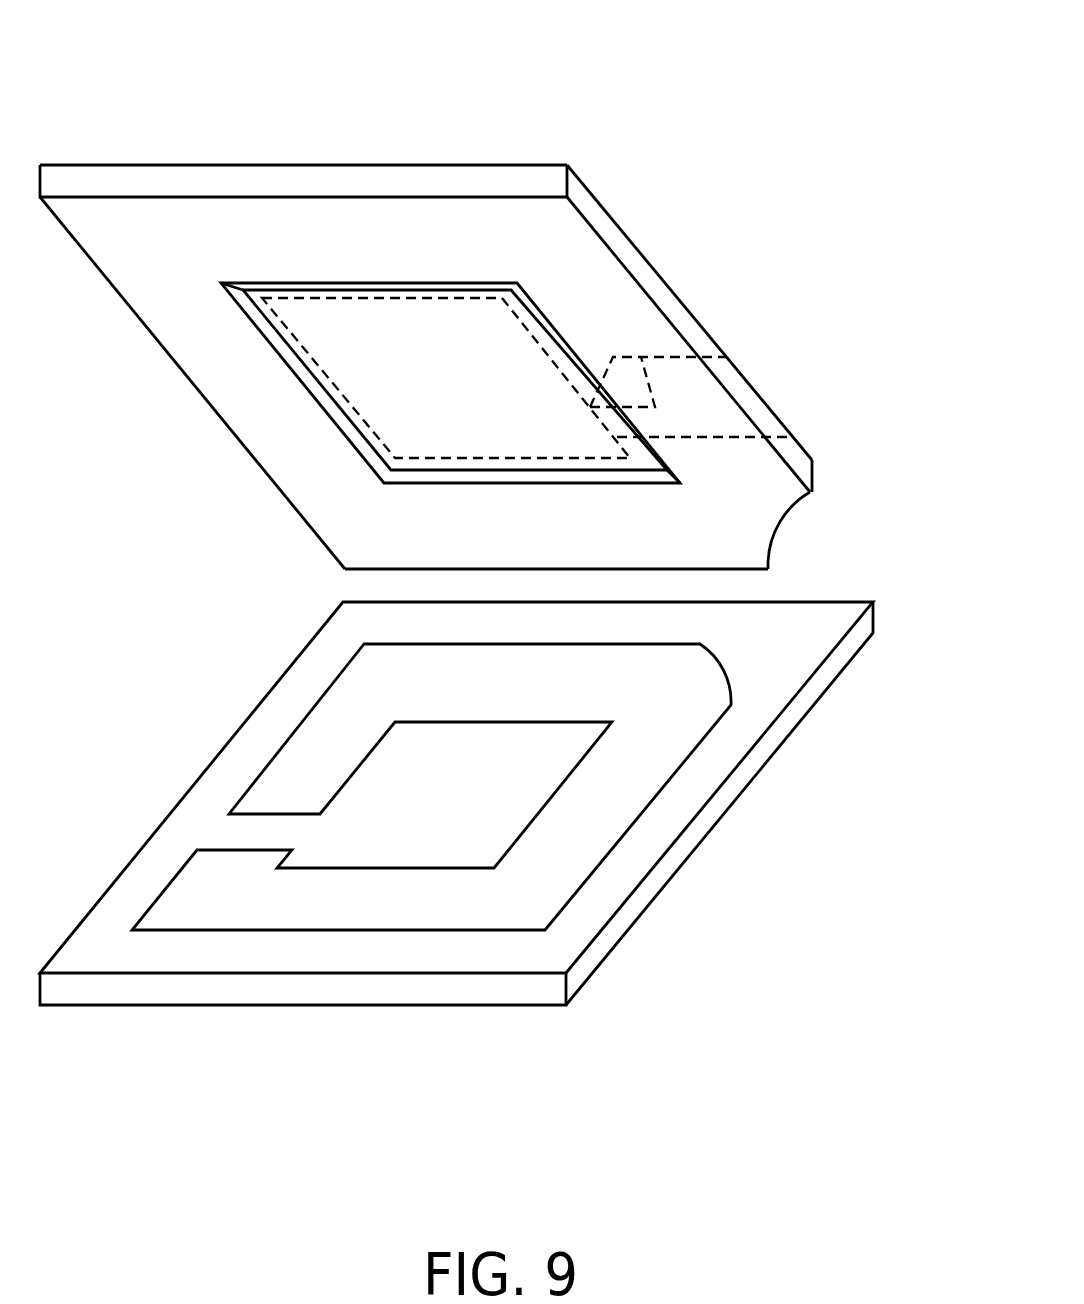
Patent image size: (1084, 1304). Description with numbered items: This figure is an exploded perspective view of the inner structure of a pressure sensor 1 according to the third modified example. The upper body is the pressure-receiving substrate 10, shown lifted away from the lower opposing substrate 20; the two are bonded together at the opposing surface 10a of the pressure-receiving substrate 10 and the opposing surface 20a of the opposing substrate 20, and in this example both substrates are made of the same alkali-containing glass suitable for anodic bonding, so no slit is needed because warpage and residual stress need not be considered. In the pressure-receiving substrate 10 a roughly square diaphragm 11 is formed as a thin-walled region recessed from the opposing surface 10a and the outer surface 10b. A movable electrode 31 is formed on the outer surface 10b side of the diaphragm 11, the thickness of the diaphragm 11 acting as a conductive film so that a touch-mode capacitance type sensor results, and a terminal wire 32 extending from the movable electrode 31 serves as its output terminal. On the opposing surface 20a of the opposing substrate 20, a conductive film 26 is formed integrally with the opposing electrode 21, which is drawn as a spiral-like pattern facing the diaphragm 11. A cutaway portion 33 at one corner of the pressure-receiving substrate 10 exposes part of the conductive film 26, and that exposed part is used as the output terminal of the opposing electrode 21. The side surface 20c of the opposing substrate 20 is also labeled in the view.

The pressure sensor 1 is at (708, 76).
The pressure-receiving substrate 10 is at (816, 403).
The opposing surface 10a is at (728, 491).
The outer surface 10b is at (300, 163).
The diaphragm 11 is at (525, 463).
The opposing substrate 20 is at (874, 663).
The opposing surface 20a is at (658, 730).
The side surface of lower substrate 20c is at (677, 858).
The opposing electrode 21 is at (545, 792).
The conductive film 26 is at (775, 693).
The movable electrode 31 is at (412, 318).
The terminal wire 32 is at (647, 373).
The cutaway portion 33 is at (778, 528).